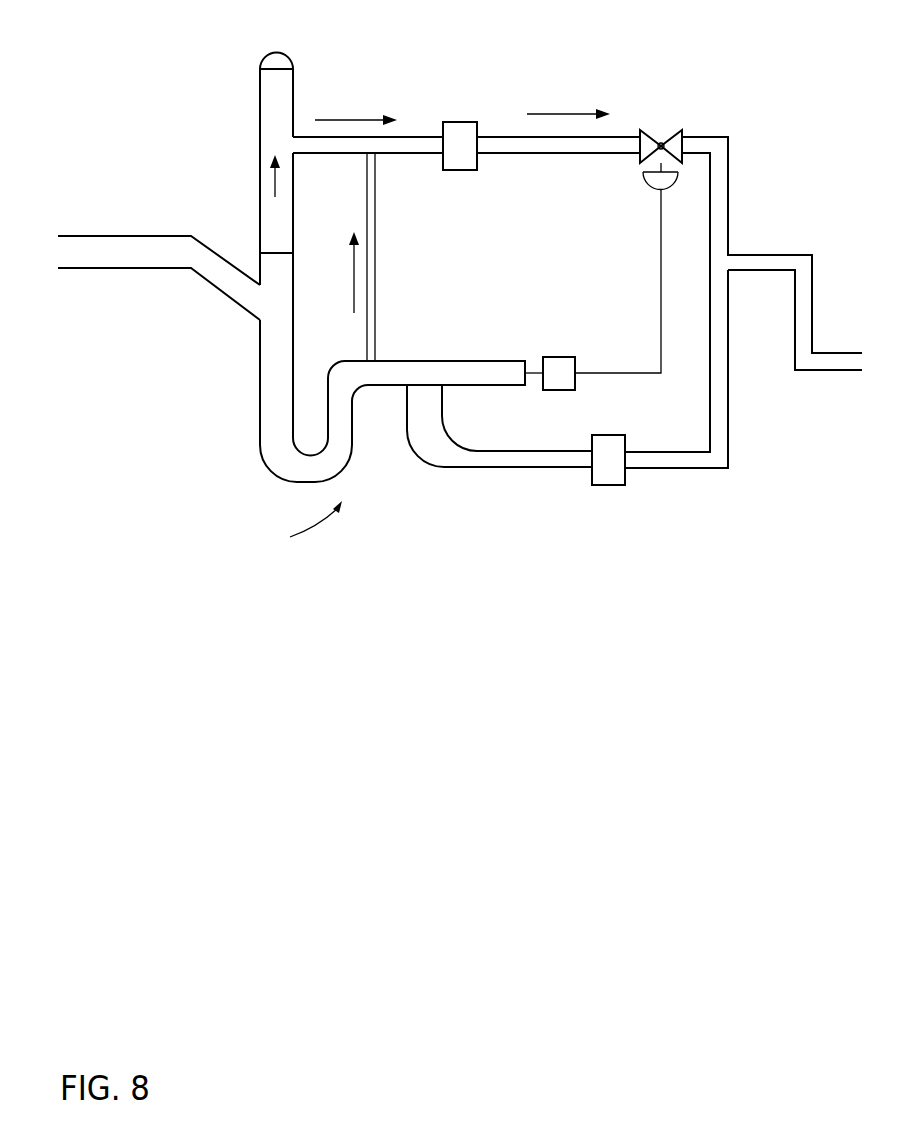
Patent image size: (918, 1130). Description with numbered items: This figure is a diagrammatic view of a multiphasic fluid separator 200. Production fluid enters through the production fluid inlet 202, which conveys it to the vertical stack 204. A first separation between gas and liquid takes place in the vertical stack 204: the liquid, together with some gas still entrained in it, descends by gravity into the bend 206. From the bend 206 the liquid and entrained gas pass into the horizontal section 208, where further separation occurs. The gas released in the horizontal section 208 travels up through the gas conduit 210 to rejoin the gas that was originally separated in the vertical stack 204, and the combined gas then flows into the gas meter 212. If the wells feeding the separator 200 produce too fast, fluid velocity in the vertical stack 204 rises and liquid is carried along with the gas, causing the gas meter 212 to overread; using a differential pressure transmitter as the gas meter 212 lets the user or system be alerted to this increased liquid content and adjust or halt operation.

The separator 200 is at (733, 68).
The production fluid inlet 202 is at (90, 236).
The vertical stack 204 is at (293, 287).
The bend 206 is at (255, 440).
The horizontal section 208 is at (440, 354).
The gas conduit 210 is at (377, 256).
The gas meter 212 is at (460, 122).